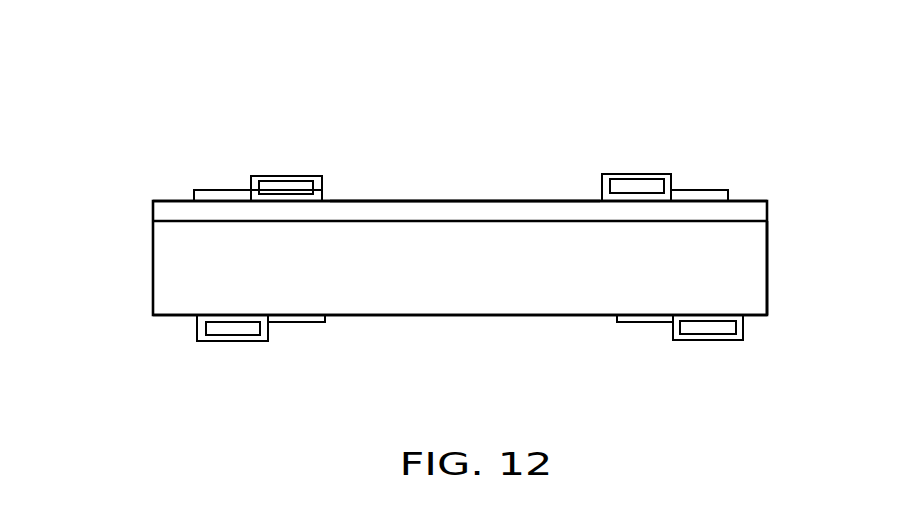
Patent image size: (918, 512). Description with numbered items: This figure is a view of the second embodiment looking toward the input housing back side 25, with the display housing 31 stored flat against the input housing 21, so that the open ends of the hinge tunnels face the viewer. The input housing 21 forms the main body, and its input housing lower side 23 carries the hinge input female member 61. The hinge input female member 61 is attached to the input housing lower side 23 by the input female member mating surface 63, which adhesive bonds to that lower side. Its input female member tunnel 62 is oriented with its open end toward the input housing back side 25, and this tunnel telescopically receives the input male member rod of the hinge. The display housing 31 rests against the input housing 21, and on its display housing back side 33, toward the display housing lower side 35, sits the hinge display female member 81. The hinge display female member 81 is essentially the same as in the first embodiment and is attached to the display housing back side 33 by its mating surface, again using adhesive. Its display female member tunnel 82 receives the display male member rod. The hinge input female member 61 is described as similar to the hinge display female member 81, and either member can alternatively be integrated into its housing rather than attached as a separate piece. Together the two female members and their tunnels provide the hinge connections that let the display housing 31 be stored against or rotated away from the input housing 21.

The input housing 21 is at (125, 265).
The input housing lower side 23 is at (534, 333).
The input housing back side 25 is at (706, 269).
The display housing 31 is at (125, 215).
The display housing back side 33 is at (523, 184).
The display housing lower side 35 is at (382, 208).
The hinge input female member 61 is at (265, 328).
The input female member tunnel 62 is at (228, 328).
The input female member mating surface 63 is at (767, 316).
The hinge display female member 81 is at (670, 178).
The display female member tunnel 82 is at (637, 185).